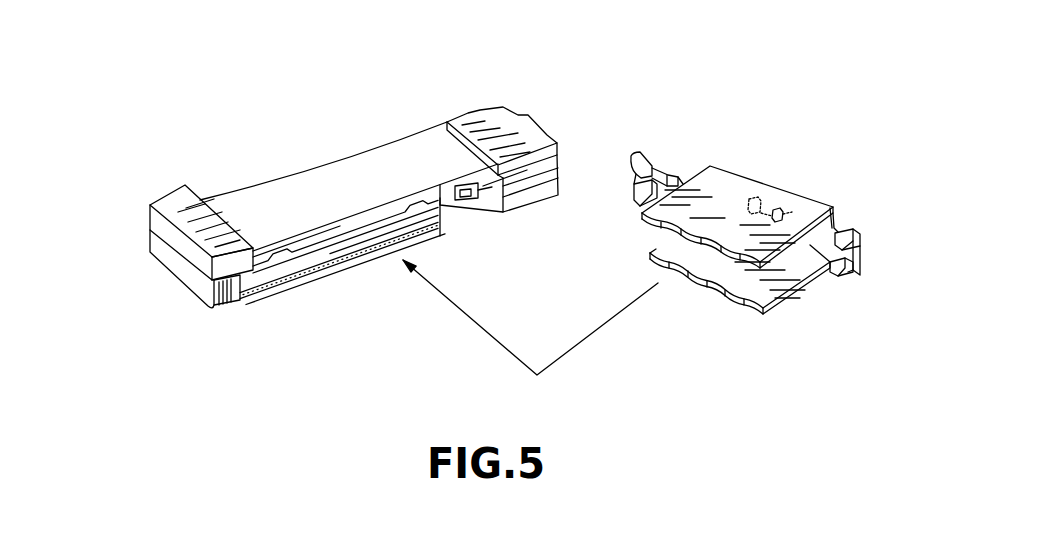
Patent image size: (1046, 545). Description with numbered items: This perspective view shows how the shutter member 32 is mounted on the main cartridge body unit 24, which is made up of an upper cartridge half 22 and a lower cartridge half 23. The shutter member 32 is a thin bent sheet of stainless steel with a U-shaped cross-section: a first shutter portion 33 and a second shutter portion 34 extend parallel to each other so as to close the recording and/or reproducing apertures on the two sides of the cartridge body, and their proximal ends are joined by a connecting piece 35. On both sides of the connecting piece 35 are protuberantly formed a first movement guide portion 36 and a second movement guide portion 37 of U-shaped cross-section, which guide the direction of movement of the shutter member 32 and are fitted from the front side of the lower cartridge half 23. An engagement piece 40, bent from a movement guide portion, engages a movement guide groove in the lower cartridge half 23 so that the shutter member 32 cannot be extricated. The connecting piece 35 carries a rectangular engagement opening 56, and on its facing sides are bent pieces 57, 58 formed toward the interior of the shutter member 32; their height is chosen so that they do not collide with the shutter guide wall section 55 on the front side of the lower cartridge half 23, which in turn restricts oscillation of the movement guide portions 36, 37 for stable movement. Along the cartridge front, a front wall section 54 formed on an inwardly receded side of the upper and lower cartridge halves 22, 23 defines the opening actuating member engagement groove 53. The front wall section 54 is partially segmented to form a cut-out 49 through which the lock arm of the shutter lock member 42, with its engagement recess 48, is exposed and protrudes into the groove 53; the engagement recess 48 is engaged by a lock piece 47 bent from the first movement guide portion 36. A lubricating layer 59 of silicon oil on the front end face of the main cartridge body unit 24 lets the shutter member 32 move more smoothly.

The upper cartridge half 22 is at (167, 200).
The lower cartridge half 23 is at (157, 242).
The main cartridge body unit 24 is at (112, 168).
The shutter member 32 is at (735, 183).
The first shutter portion 33 is at (663, 220).
The second shutter portion 34 is at (773, 307).
The connecting piece 35 is at (833, 220).
The first movement guide portion 36 is at (672, 173).
The second movement guide portion 37 is at (853, 253).
The engagement piece 40 is at (835, 283).
The shutter lock member 42 is at (494, 172).
The lock piece 47 is at (637, 153).
The engagement recess 48 is at (465, 193).
The cut-out 49 is at (437, 197).
The opening actuating member engagement groove 53 is at (527, 168).
The front wall section 54 is at (355, 242).
The shutter guide wall section 55 is at (291, 270).
The engagement opening 56 is at (777, 203).
The bent piece 57 is at (760, 203).
The bent piece 58 is at (797, 210).
The lubricating layer 59 is at (303, 227).